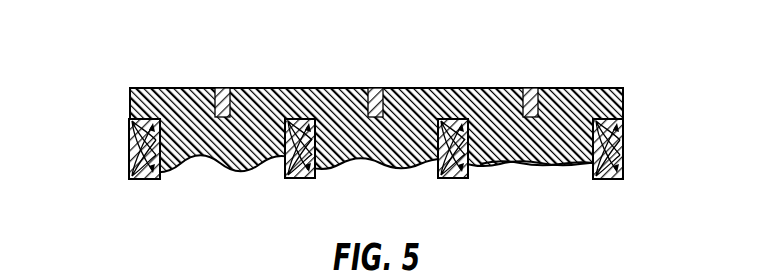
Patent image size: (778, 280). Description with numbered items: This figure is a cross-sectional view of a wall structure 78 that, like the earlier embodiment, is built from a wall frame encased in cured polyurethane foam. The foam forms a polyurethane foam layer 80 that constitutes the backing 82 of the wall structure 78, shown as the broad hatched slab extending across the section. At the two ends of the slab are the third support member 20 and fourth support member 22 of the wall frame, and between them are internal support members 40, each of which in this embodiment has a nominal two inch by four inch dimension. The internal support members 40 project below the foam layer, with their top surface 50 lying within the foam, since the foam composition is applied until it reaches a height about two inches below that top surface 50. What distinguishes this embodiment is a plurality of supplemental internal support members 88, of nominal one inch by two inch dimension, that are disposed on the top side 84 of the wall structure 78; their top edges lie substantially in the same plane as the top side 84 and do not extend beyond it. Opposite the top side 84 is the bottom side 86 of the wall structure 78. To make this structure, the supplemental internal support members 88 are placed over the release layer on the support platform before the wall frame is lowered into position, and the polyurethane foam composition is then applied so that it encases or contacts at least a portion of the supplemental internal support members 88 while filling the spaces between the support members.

The wall structure 78 is at (102, 105).
The polyurethane foam layer 80 is at (623, 106).
The backing 82 is at (310, 88).
The top side 84 is at (560, 70).
The bottom side 86 is at (545, 185).
The supplemental internal support members 88 is at (222, 88).
The third support member 20 is at (130, 172).
The fourth support member 22 is at (623, 172).
The internal support members 40 is at (285, 165).
The top surface 50 is at (300, 178).